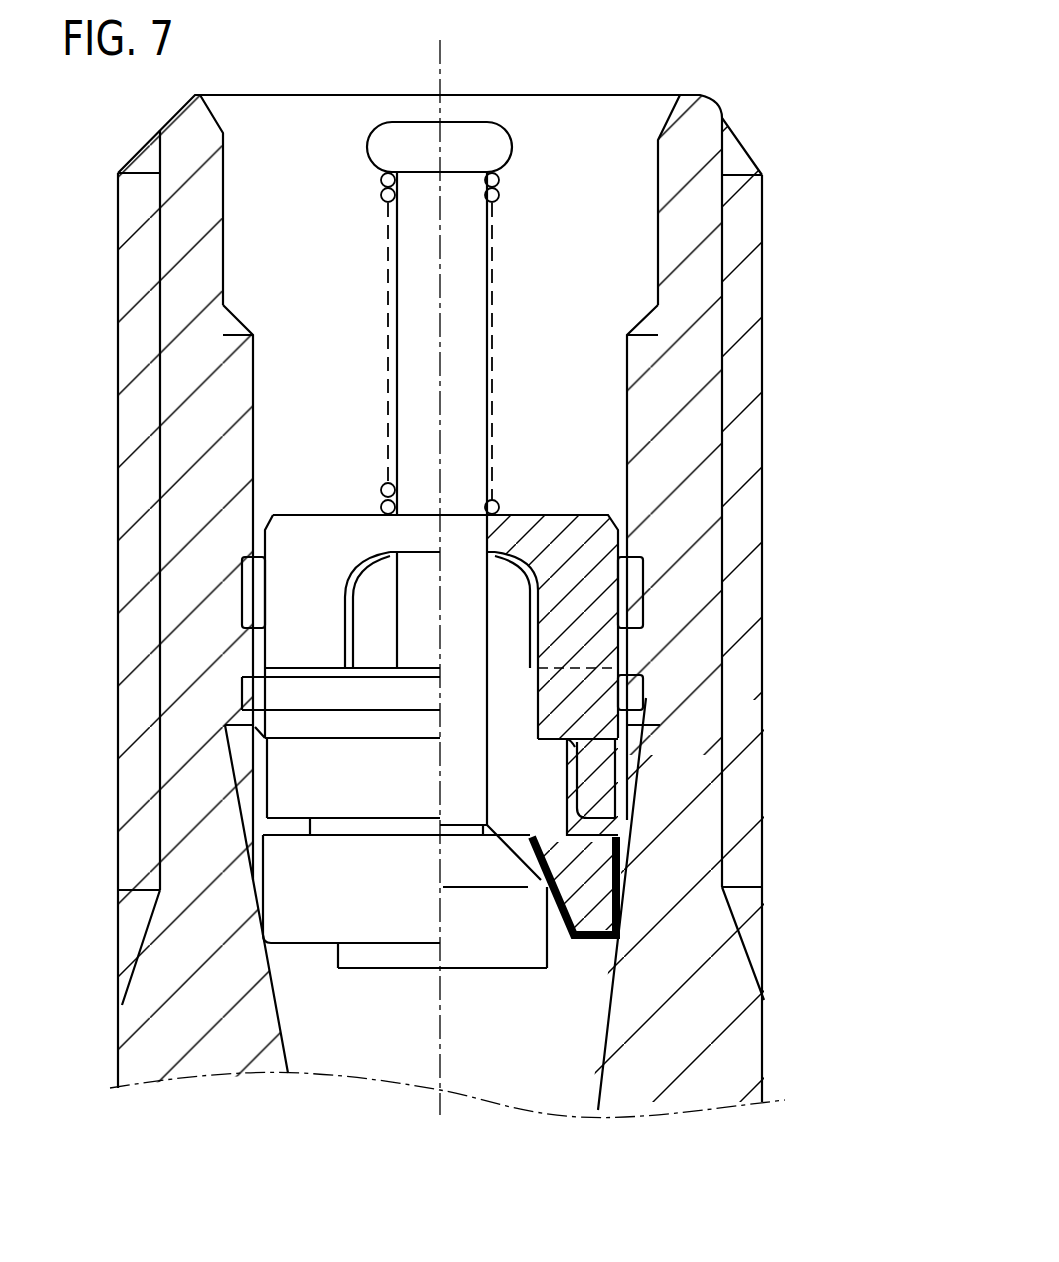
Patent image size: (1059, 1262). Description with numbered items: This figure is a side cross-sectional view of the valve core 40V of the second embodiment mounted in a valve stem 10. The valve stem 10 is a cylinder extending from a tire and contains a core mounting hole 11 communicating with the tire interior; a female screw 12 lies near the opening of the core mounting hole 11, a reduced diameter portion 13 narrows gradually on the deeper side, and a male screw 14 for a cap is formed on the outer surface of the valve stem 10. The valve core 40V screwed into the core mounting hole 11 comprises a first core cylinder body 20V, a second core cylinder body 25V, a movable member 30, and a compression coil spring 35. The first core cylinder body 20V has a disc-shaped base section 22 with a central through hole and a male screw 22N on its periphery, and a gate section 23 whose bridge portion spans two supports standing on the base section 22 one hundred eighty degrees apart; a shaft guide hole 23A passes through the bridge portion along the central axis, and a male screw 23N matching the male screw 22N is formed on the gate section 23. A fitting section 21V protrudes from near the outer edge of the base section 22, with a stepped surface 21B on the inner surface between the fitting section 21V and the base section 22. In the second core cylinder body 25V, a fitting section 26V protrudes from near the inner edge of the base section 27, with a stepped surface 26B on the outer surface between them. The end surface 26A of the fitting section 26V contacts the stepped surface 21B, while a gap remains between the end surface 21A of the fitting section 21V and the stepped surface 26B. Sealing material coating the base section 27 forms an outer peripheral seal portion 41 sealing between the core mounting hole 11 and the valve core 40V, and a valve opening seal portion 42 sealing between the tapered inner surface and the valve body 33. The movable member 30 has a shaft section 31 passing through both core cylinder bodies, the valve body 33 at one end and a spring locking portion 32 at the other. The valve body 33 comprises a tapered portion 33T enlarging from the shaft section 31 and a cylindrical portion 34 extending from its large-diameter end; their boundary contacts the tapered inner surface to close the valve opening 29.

The valve stem 10 is at (693, 92).
The core mounting hole 11 is at (593, 118).
The female screw 12 is at (640, 355).
The reduced diameter portion 13 is at (607, 1002).
The male screw 14 is at (745, 222).
The first core cylinder body 20V is at (543, 498).
The end surface 21A is at (578, 837).
The stepped surface 21B is at (563, 733).
The fitting section 21V is at (568, 786).
The base section 22 is at (573, 687).
The male screw 22N is at (637, 693).
The gate section 23 is at (590, 553).
The shaft guide hole 23A is at (497, 530).
The male screw 23N is at (633, 590).
The second core cylinder body 25V is at (595, 947).
The end surface 26A is at (605, 770).
The stepped surface 26B is at (577, 867).
The fitting section 26V is at (593, 823).
The base section 27 is at (550, 890).
The valve opening 29 is at (552, 920).
The movable member 30 is at (475, 118).
The shaft section 31 is at (410, 245).
The spring locking portion 32 is at (395, 143).
The valve body 33 is at (540, 1163).
The tapered portion 33T is at (475, 858).
The cylindrical portion 34 is at (518, 952).
The compression coil spring 35 is at (500, 181).
The valve core 40V is at (318, 1005).
The outer peripheral seal portion 41 is at (622, 935).
The valve opening seal portion 42 is at (620, 915).